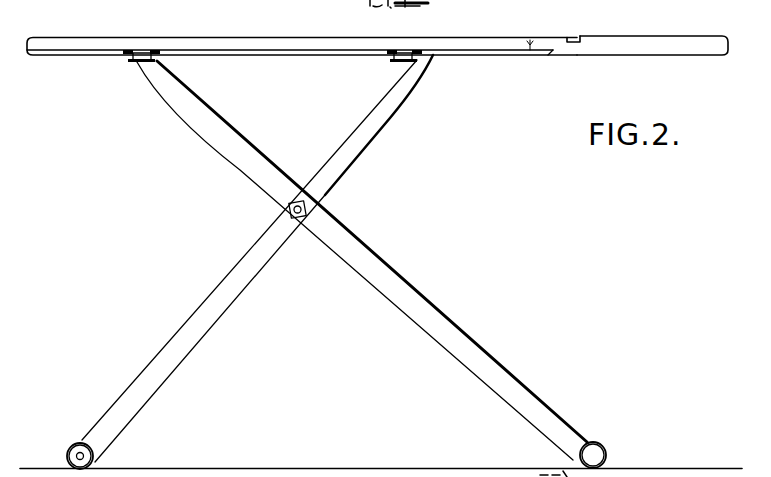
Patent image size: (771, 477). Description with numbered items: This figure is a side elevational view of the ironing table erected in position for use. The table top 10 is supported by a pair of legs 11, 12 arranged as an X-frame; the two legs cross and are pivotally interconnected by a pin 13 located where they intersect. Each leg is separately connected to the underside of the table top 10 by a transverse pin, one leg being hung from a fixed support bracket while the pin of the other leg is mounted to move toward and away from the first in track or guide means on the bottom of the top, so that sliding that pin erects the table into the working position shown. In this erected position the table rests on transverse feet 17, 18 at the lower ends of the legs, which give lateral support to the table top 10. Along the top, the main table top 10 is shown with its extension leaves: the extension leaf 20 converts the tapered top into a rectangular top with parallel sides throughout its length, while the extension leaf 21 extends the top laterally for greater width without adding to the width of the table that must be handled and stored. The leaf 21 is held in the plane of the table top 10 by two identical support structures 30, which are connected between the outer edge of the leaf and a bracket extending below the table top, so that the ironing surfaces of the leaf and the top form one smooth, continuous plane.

The table top 10 is at (228, 37).
The extension leaf 20 is at (670, 35).
The extension leaf 21 is at (498, 19).
The support structures 30 is at (137, 62).
The leg 11 is at (240, 142).
The leg 12 is at (352, 140).
The pin 13 is at (298, 200).
The transverse foot 17 is at (600, 442).
The transverse foot 18 is at (74, 441).